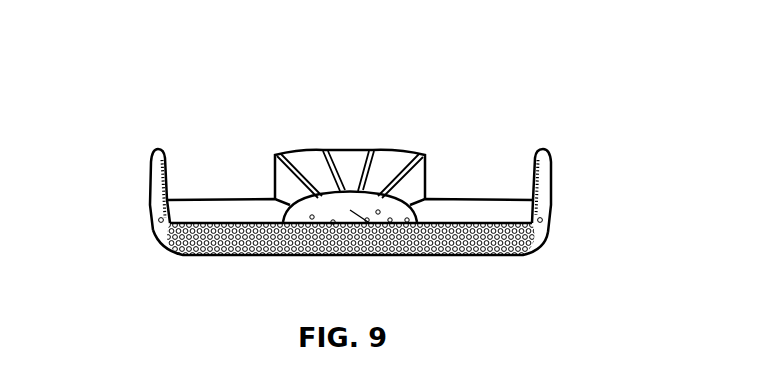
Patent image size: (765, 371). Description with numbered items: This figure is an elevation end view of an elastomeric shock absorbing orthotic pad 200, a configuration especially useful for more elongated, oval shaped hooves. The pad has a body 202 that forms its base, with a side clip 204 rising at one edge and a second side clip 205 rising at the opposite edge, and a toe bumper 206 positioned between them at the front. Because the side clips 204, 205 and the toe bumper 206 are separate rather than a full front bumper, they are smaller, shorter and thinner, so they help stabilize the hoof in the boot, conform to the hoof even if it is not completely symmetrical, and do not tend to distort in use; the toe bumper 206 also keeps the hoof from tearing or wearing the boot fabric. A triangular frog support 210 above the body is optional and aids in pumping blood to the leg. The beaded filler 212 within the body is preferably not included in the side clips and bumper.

The orthotic pad 200 is at (348, 182).
The body 202 is at (440, 207).
The side clip 204 is at (552, 198).
The side clip 205 is at (150, 200).
The toe bumper 206 is at (383, 258).
The triangular frog support 210 is at (350, 152).
The foam layer 212 is at (262, 258).